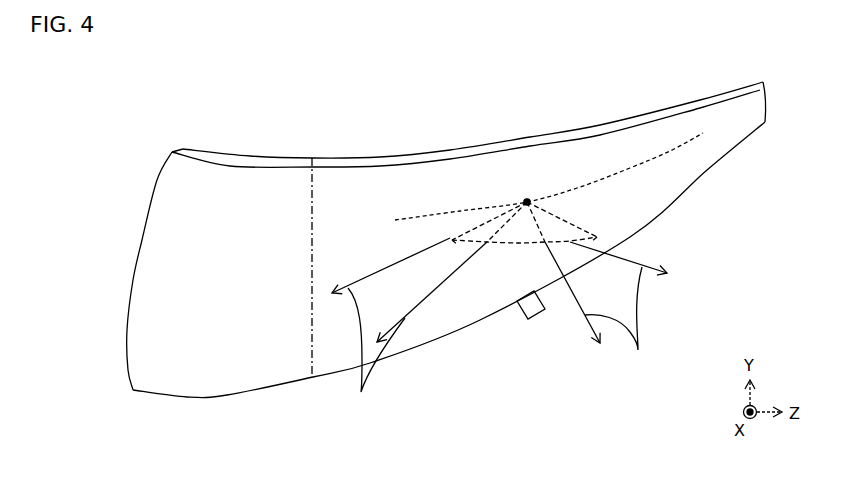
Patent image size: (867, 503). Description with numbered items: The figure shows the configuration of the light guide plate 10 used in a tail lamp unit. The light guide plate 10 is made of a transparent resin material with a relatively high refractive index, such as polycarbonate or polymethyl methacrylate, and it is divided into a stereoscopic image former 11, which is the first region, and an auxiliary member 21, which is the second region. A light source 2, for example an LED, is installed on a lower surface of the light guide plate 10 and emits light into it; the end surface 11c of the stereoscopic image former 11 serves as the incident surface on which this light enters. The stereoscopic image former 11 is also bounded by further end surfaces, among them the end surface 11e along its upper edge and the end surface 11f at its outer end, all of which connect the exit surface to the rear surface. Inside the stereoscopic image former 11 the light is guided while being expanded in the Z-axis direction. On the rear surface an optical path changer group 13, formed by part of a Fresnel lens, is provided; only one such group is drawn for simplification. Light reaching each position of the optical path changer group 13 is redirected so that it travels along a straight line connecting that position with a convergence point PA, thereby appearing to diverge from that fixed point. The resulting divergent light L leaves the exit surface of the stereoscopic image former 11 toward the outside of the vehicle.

The light guide plate 10 is at (247, 115).
The stereoscopic image former 11 is at (705, 162).
The end surface 11c is at (673, 208).
The end surface 11e is at (411, 158).
The end surface 11f is at (768, 96).
The optical path changer group 13 is at (580, 246).
The light source 2 is at (537, 318).
The auxiliary member 21 is at (223, 378).
The convergence point PA is at (527, 199).
The divergent light L is at (499, 328).